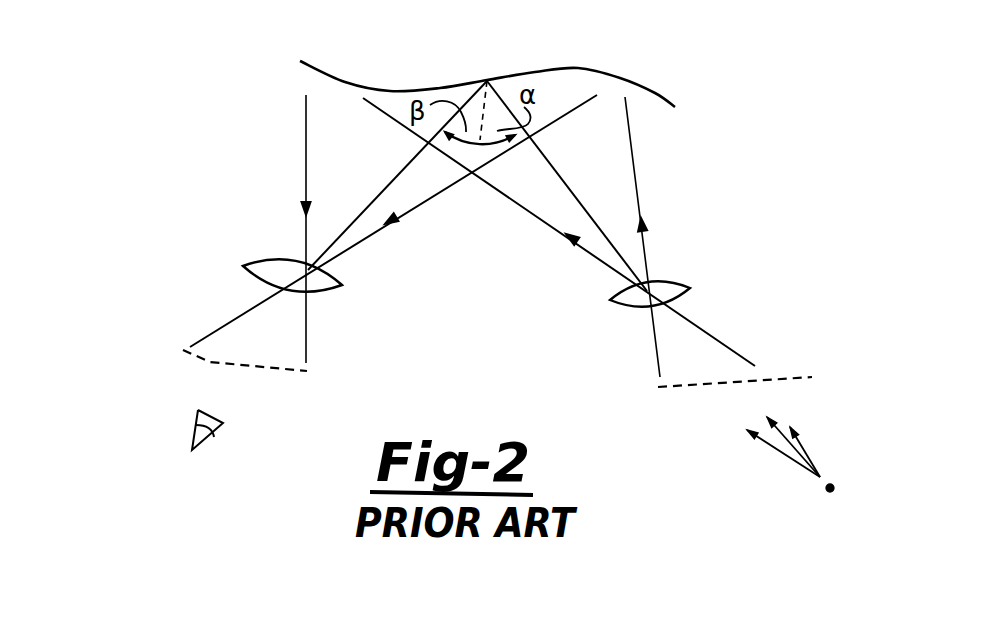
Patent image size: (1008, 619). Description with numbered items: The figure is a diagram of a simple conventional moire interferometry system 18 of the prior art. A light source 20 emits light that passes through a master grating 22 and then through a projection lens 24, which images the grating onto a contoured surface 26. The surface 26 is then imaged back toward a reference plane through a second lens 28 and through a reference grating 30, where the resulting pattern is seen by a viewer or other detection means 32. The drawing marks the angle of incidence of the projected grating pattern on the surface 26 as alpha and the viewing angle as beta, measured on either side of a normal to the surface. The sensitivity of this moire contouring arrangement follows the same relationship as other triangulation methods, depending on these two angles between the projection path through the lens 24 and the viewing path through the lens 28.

The conventional moire system 18 is at (685, 172).
The light source 20 is at (836, 490).
The master grating 22 is at (770, 378).
The projection lens 24 is at (690, 288).
The contoured surface 26 is at (659, 92).
The second lens 28 is at (253, 264).
The reference grating 30 is at (178, 347).
The viewer or other detection means 32 is at (187, 443).